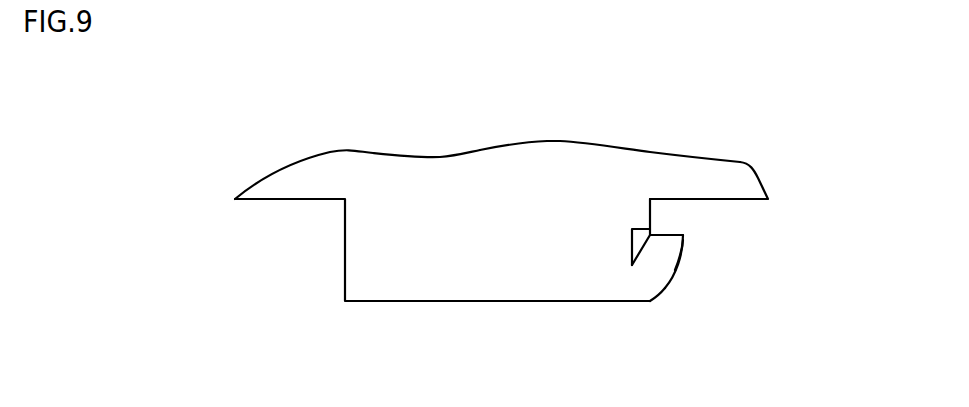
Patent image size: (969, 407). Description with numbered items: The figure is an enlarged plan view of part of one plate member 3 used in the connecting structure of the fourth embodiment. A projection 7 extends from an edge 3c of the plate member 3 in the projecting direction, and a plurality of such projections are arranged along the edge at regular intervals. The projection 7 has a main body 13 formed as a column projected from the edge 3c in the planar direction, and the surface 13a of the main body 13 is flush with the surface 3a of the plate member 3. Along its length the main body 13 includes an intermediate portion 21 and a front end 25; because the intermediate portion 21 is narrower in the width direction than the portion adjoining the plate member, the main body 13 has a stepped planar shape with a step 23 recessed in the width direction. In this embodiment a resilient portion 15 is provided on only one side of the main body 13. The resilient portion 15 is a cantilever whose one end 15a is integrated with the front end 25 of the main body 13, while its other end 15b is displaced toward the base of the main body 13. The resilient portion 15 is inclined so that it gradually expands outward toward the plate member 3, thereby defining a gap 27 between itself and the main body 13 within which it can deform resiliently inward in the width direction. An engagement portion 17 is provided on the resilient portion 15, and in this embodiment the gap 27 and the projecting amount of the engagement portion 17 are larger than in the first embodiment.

The plate member 3 is at (569, 143).
The surface of the plate member 3a is at (510, 158).
The edge of the plate member 3c is at (748, 200).
The projection 7 is at (450, 303).
The main body 13 is at (507, 273).
The surface of the main body 13a is at (537, 288).
The resilient portion 15 is at (665, 269).
The one end of the resilient portion 15a is at (642, 303).
The other end of the resilient portion 15b is at (672, 235).
The engagement portion 17 is at (680, 253).
The intermediate portion 21 is at (615, 248).
The step 23 is at (632, 229).
The front end 25 is at (415, 303).
The gap 27 is at (644, 233).